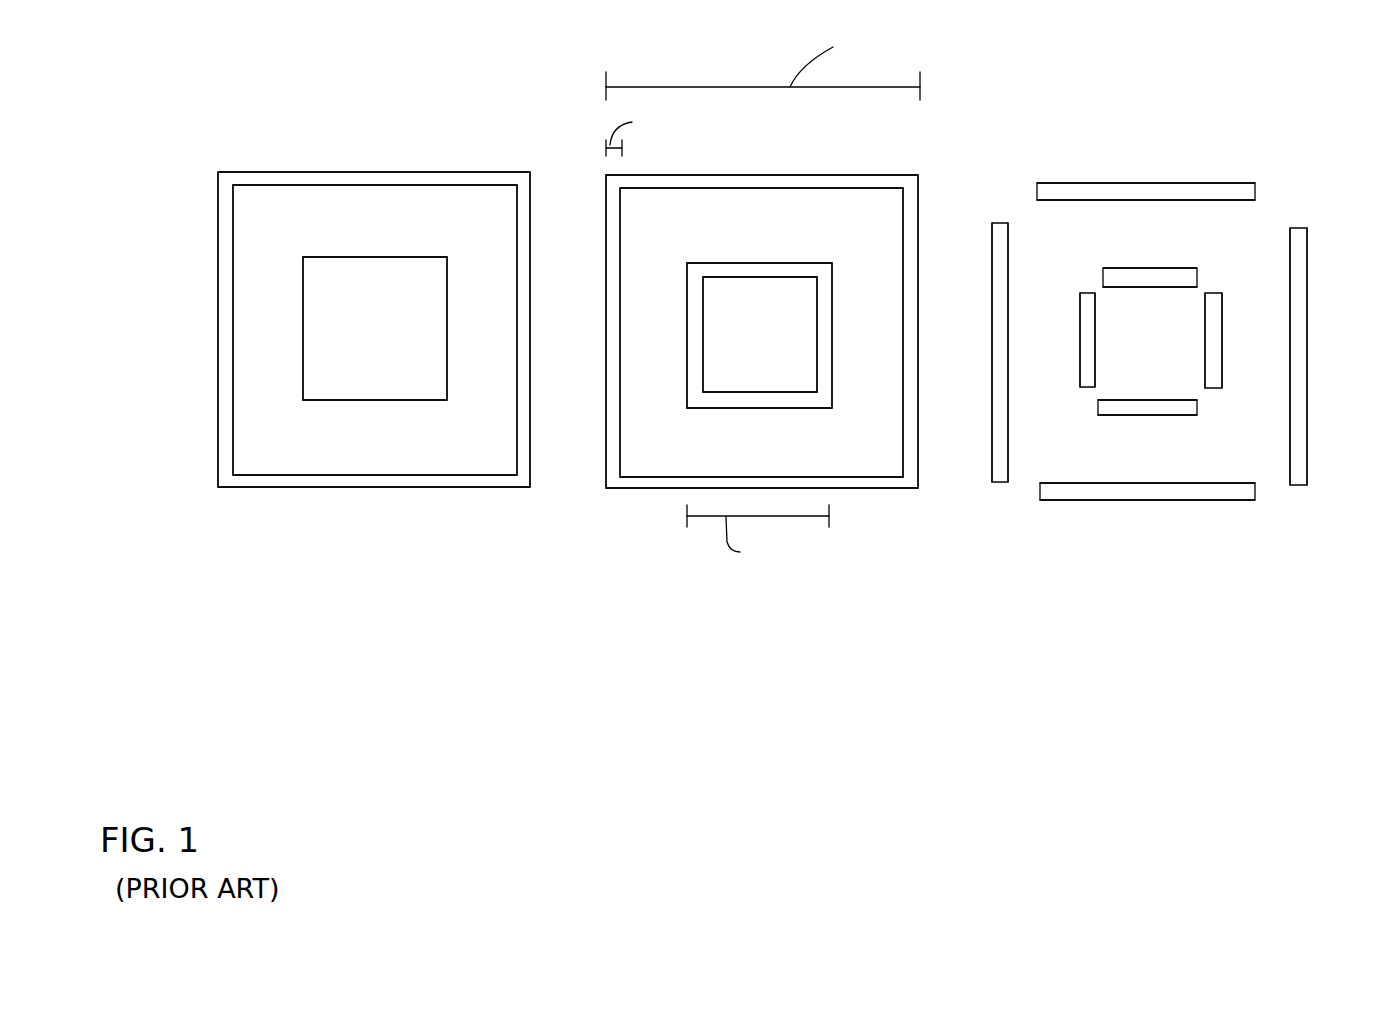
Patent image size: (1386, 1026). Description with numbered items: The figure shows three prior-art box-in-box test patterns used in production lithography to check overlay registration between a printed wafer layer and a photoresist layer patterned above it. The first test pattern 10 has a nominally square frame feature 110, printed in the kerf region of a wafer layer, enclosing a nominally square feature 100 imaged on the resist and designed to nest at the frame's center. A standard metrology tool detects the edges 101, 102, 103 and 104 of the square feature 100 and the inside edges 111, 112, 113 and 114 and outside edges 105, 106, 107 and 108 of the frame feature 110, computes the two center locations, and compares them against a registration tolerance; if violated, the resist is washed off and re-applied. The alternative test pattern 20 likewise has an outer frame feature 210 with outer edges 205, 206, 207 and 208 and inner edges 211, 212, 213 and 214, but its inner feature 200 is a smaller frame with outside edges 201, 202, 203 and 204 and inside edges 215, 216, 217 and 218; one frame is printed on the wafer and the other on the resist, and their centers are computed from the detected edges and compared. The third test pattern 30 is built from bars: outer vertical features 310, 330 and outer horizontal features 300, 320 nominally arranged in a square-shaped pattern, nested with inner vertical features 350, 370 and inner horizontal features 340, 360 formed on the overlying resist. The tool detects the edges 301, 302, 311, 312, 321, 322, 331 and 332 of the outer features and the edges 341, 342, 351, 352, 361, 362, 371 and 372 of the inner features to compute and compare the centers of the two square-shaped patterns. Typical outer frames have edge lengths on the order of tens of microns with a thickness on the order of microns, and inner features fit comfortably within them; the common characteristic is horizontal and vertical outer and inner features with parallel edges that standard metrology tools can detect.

The first test pattern 10 is at (354, 547).
The nominally square feature 100 is at (390, 292).
The edge of square feature 101 is at (360, 256).
The edge of square feature 102 is at (447, 322).
The edge of square feature 103 is at (356, 400).
The edge of square feature 104 is at (303, 332).
The outside edge of frame feature 105 is at (304, 170).
The outside edge of frame feature 106 is at (530, 302).
The outside edge of frame feature 107 is at (384, 490).
The outside edge of frame feature 108 is at (218, 328).
The frame feature 110 is at (455, 176).
The inside edge of frame feature 111 is at (346, 183).
The inside edge of frame feature 112 is at (517, 384).
The inside edge of frame feature 113 is at (289, 472).
The inside edge of frame feature 114 is at (234, 368).
The alternative test pattern 20 is at (618, 555).
The inner feature 200 is at (687, 292).
The outside edge of inner frame 201 is at (725, 263).
The outside edge of inner frame 202 is at (832, 306).
The outside edge of inner frame 203 is at (728, 408).
The outside edge of inner frame 204 is at (687, 368).
The outer edge of outer frame 205 is at (703, 172).
The outer edge of outer frame 206 is at (918, 343).
The outer edge of outer frame 207 is at (862, 496).
The outer edge of outer frame 208 is at (606, 386).
The frame feature 210 is at (797, 183).
The inner edge of outer frame 211 is at (757, 193).
The inner edge of outer frame 212 is at (903, 403).
The inner edge of outer frame 213 is at (773, 477).
The inner edge of outer frame 214 is at (620, 410).
The inside edge of inner frame 215 is at (790, 278).
The inside edge of inner frame 216 is at (817, 350).
The inside edge of inner frame 217 is at (731, 383).
The inside edge of inner frame 218 is at (718, 328).
The third overlay test pattern 30 is at (1163, 596).
The outer horizontal feature 300 is at (1110, 183).
The edge of outer horizontal feature 301 is at (1198, 183).
The edge of outer horizontal feature 302 is at (1224, 200).
The outer vertical feature 310 is at (1307, 282).
The edge of outer vertical feature 311 is at (1290, 418).
The edge of outer vertical feature 312 is at (1307, 380).
The outer horizontal feature 320 is at (1192, 500).
The edge of outer horizontal feature 321 is at (1075, 483).
The edge of outer horizontal feature 322 is at (1108, 500).
The outer vertical feature 330 is at (992, 250).
The edge of outer vertical feature 331 is at (992, 392).
The edge of outer vertical feature 332 is at (1008, 422).
The inner horizontal feature 340 is at (1172, 268).
The edge of inner horizontal feature 341 is at (1112, 268).
The edge of inner horizontal feature 342 is at (1130, 287).
The inner vertical feature 350 is at (1218, 372).
The edge of inner vertical feature 351 is at (1222, 322).
The edge of inner vertical feature 352 is at (1205, 338).
The inner horizontal feature 360 is at (1175, 415).
The edge of inner horizontal feature 361 is at (1137, 415).
The edge of inner horizontal feature 362 is at (1118, 400).
The inner vertical feature 370 is at (1080, 310).
The edge of inner vertical feature 371 is at (1080, 330).
The edge of inner vertical feature 372 is at (1095, 352).